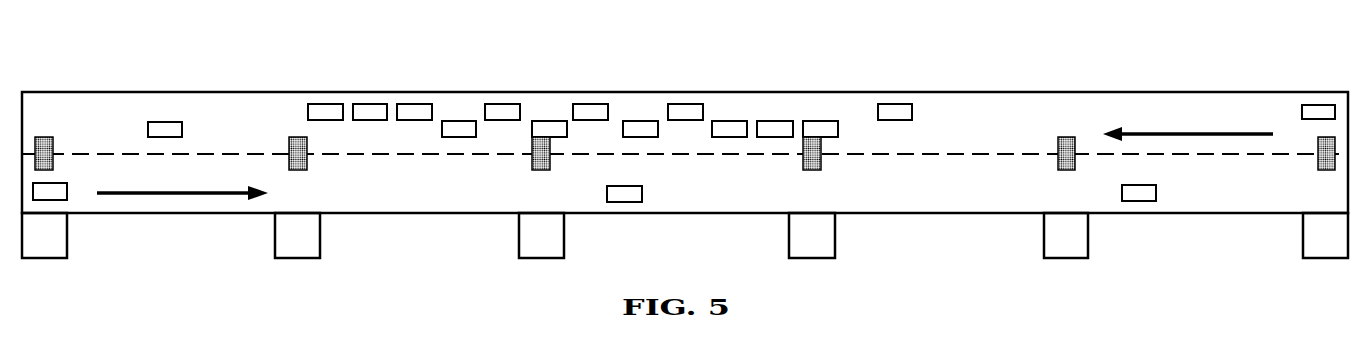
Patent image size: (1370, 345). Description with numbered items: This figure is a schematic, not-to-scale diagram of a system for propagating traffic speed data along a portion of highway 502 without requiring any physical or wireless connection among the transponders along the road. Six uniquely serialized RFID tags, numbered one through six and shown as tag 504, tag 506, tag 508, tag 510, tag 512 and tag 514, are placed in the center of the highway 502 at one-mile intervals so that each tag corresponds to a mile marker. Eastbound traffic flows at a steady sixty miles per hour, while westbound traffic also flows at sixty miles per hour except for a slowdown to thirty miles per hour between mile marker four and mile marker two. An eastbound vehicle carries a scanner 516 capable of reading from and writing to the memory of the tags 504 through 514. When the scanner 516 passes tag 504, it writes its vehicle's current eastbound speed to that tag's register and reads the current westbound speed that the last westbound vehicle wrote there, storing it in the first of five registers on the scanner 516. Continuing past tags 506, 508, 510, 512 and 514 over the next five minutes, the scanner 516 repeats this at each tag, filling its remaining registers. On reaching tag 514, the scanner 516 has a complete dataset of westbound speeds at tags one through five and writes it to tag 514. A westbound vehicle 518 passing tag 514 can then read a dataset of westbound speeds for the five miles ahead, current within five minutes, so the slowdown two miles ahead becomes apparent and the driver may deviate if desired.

The highway 502 is at (236, 88).
The RFID tag 1 504 is at (43, 136).
The RFID tag 2 506 is at (296, 170).
The RFID tag 3 508 is at (540, 170).
The RFID tag 4 510 is at (812, 170).
The RFID tag 5 512 is at (1066, 170).
The RFID tag 6 514 is at (1326, 170).
The scanner 516 is at (67, 192).
The westbound vehicle 518 is at (1318, 105).